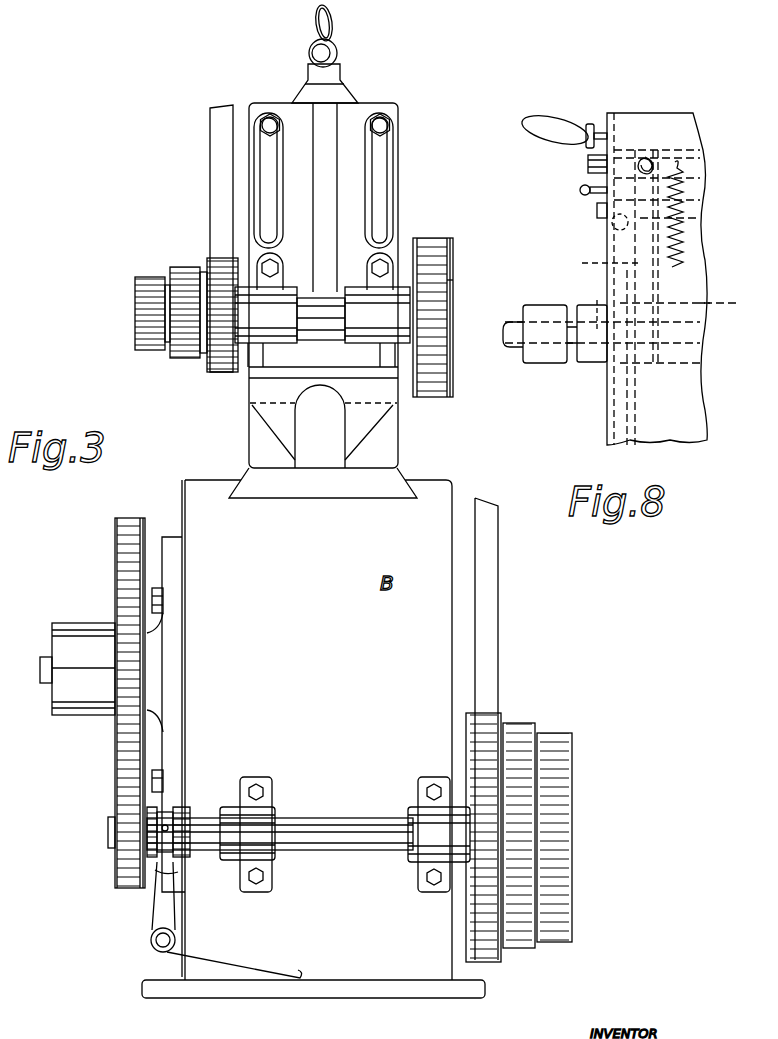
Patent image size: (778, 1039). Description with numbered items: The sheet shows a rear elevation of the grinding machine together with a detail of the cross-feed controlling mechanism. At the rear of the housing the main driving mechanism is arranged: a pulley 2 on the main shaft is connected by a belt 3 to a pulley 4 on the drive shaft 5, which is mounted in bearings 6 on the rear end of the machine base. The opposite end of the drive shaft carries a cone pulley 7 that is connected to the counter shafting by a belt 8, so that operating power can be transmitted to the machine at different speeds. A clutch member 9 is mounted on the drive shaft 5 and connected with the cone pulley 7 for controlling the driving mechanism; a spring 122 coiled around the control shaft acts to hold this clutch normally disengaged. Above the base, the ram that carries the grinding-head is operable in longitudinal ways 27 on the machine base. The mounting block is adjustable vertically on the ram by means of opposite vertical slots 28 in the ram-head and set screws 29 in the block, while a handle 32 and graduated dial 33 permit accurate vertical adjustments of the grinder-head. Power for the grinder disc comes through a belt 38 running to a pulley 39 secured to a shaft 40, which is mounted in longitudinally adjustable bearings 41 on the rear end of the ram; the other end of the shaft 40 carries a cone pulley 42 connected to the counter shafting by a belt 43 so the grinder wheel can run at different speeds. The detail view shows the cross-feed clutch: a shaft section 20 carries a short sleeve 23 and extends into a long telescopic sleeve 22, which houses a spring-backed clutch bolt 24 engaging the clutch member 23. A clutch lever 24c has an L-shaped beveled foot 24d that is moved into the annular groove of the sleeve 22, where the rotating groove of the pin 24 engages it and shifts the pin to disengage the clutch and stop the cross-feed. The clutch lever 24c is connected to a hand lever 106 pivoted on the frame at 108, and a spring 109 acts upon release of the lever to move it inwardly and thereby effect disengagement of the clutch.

In FIG. 3, the pulley 2 is at (118, 528).
In FIG. 3, the belt 3 is at (127, 747).
In FIG. 3, the pulley 4 is at (112, 855).
In FIG. 3, the drive shaft 5 is at (342, 827).
In FIG. 3, the bearings 6 is at (272, 812).
In FIG. 3, the cone pulley 7 is at (525, 730).
In FIG. 3, the belt 8 is at (487, 637).
In FIG. 3, the clutch member 9 is at (167, 825).
In FIG. 3, the longitudinal ways 27 is at (407, 483).
In FIG. 3, the vertical slots 28 is at (265, 153).
In FIG. 3, the set screws 29 is at (262, 122).
In FIG. 3, the handle 32 is at (334, 46).
In FIG. 3, the graduated dial 33 is at (340, 97).
In FIG. 3, the belt 38 is at (450, 240).
In FIG. 3, the pulley 39 is at (455, 288).
In FIG. 3, the shaft 40 is at (308, 330).
In FIG. 3, the longitudinally adjustable bearings 41 is at (258, 355).
In FIG. 3, the cone pulley 42 is at (137, 315).
In FIG. 3, the belt 43 is at (215, 190).
In FIG. 3, the spring 122 is at (152, 943).
In FIG. 8, the shaft section 20 is at (505, 338).
In FIG. 8, the telescopic sleeve 22 is at (592, 352).
In FIG. 8, the short sleeve 23 is at (535, 352).
In FIG. 8, the clutch bolt 24 is at (582, 306).
In FIG. 8, the clutch lever 24c is at (595, 263).
In FIG. 8, the L-shaped beveled foot 24d is at (722, 302).
In FIG. 8, the hand lever 106 is at (530, 132).
In FIG. 8, the pivot 108 is at (693, 152).
In FIG. 8, the spring 109 is at (700, 219).